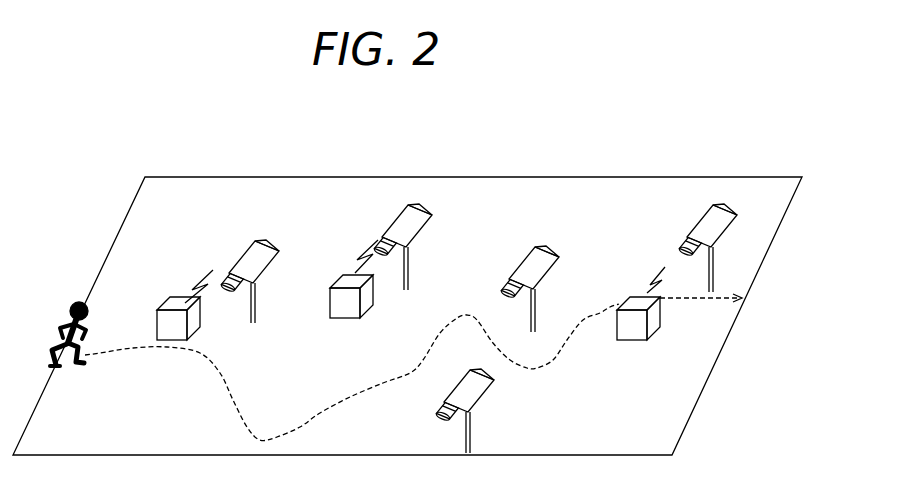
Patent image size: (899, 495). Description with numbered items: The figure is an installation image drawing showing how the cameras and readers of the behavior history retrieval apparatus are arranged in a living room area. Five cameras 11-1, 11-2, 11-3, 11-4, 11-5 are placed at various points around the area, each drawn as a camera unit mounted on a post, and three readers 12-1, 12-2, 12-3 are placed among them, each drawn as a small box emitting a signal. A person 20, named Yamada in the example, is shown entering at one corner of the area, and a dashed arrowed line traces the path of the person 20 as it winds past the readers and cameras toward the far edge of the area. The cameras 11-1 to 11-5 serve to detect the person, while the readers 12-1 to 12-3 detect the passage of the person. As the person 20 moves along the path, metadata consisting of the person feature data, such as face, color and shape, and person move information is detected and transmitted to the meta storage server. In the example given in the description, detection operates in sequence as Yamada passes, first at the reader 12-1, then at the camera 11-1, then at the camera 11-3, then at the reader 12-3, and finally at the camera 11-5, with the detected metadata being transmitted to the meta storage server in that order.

The camera 11-1 is at (258, 240).
The camera 11-2 is at (432, 216).
The camera 11-3 is at (553, 252).
The camera 11-4 is at (481, 397).
The camera 11-5 is at (702, 216).
The reader 12-1 is at (165, 296).
The reader 12-2 is at (343, 319).
The reader 12-3 is at (622, 342).
The person 20 is at (56, 318).